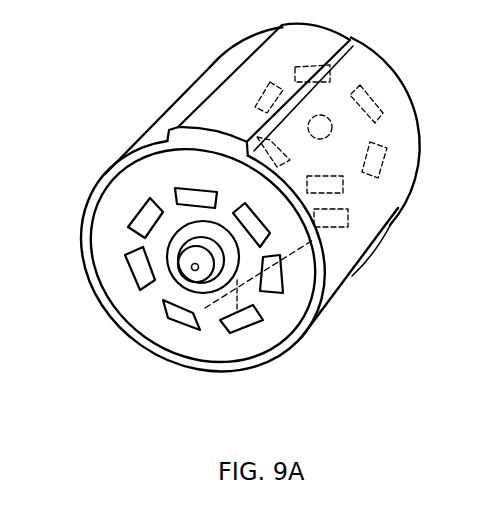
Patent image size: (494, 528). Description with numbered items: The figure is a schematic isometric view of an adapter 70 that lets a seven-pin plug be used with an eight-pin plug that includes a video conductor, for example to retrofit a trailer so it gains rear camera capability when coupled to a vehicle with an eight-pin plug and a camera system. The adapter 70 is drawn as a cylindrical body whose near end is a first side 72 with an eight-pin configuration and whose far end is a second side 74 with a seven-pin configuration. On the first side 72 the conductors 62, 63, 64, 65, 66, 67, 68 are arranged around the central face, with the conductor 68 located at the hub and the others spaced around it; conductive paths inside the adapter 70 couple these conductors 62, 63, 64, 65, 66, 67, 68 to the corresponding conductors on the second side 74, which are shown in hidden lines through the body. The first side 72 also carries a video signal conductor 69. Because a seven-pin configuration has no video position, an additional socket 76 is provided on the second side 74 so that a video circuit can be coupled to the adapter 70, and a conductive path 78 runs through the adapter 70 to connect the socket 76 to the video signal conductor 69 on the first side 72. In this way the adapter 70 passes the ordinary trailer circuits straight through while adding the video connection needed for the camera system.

The adapter 70 is at (182, 46).
The first side 72 is at (97, 149).
The second side 74 is at (398, 70).
The conductor 62 is at (187, 193).
The conductor 63 is at (253, 221).
The conductor 64 is at (140, 212).
The conductor 65 is at (278, 270).
The conductor 66 is at (135, 268).
The conductor 67 is at (247, 312).
The conductor 68 is at (199, 269).
The video signal conductor 69 is at (180, 313).
The additional socket 76 is at (340, 221).
The conductive path 78 is at (318, 257).